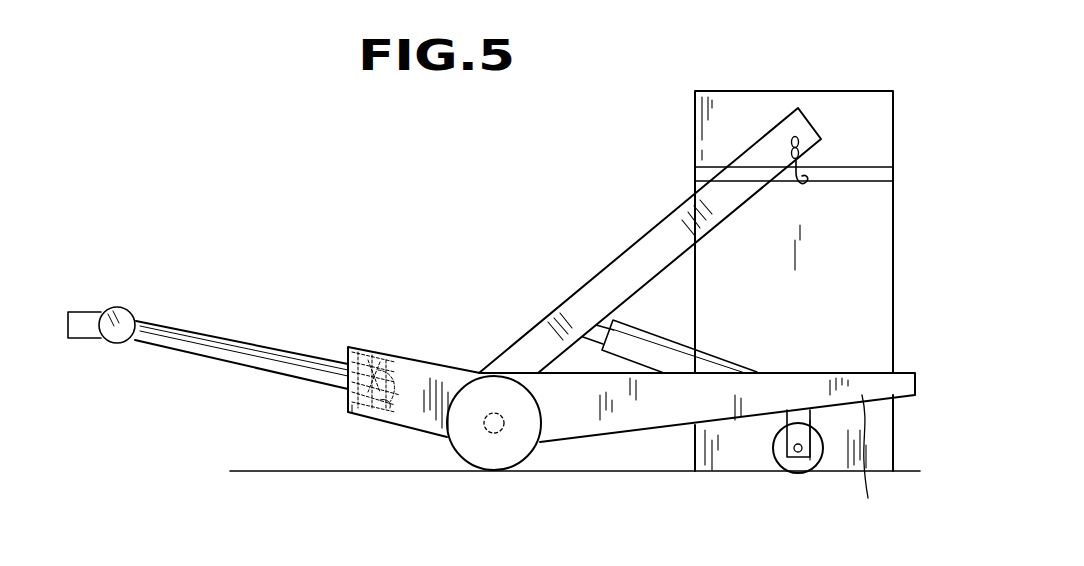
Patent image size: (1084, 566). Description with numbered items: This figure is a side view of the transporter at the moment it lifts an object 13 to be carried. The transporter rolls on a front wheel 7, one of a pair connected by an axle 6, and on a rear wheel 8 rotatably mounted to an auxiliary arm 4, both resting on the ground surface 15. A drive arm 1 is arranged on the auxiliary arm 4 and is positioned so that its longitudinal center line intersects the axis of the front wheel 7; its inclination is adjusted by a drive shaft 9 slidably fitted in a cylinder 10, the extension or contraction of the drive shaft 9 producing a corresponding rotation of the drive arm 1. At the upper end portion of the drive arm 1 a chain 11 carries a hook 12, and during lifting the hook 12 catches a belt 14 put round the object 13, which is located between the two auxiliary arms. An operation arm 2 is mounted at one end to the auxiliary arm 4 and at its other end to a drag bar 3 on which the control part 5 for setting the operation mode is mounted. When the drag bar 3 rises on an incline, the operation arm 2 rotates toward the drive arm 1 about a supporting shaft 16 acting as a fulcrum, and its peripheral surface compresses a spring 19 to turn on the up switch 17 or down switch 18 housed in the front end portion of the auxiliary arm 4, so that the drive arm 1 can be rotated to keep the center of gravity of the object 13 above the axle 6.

The drive arm 1 is at (630, 263).
The operation arm 2 is at (235, 352).
The drag bar 3 is at (118, 338).
The auxiliary arm 4 is at (865, 463).
The control part 5 is at (87, 322).
The axle 6 is at (490, 433).
The front wheel 7 is at (500, 464).
The rear wheel 8 is at (800, 466).
The drive shaft 9 is at (592, 344).
The cylinder 10 is at (683, 363).
The chain 11 is at (795, 138).
The hook 12 is at (806, 184).
The object 13 is at (749, 100).
The belt 14 is at (846, 168).
The ground surface 15 is at (358, 472).
The supporting shaft 16 is at (390, 360).
The up switch 17 is at (364, 350).
The down switch 18 is at (352, 414).
The spring 19 is at (388, 410).